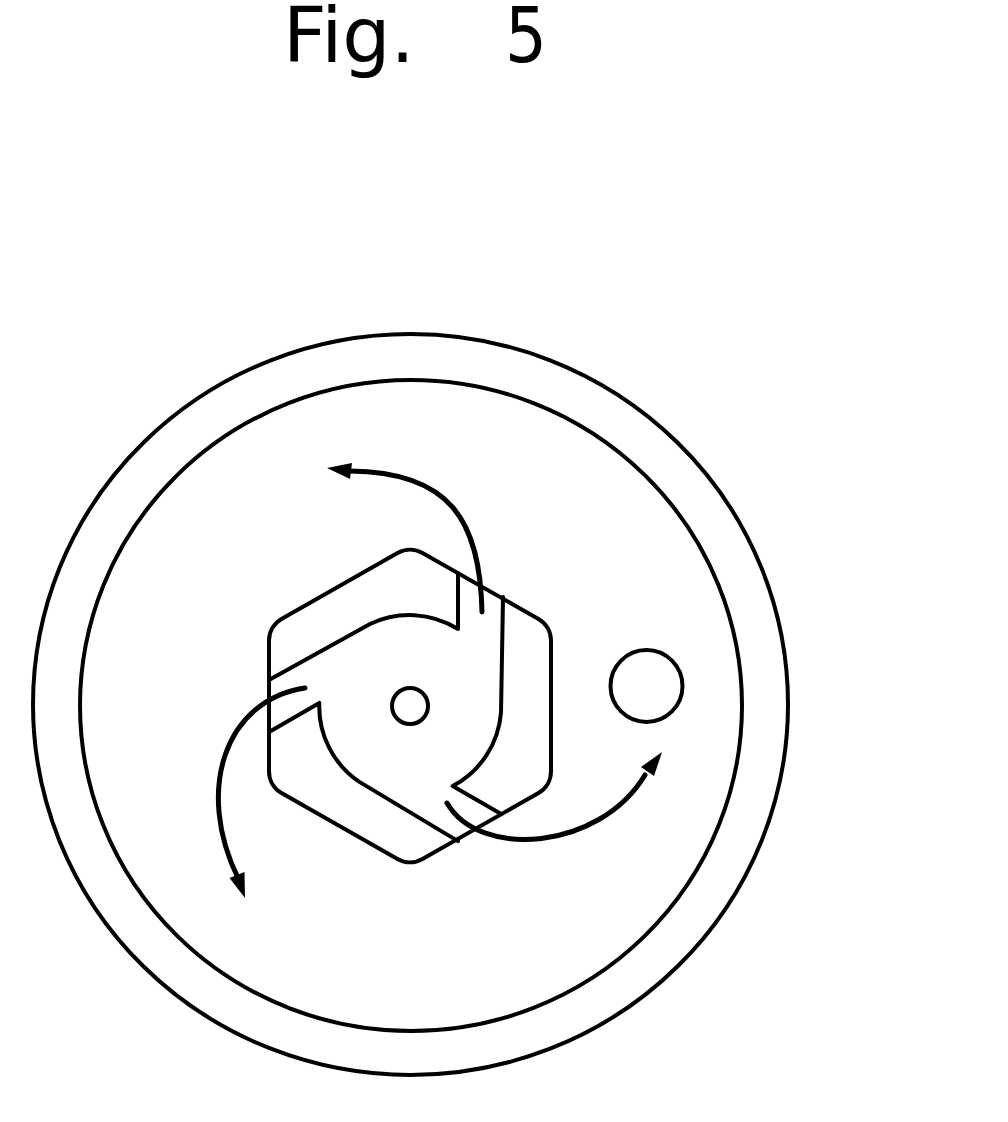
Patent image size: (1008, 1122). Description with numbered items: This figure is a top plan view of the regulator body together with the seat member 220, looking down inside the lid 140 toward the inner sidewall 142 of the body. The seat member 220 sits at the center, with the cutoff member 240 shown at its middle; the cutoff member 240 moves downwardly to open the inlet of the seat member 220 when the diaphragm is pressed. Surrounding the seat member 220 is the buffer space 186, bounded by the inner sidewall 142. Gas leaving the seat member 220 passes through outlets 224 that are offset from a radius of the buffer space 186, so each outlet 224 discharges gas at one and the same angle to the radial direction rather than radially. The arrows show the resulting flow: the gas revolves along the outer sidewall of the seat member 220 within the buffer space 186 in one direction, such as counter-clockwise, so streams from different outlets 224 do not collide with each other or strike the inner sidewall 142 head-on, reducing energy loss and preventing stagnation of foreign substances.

The lid 140 is at (705, 458).
The inner sidewall 142 is at (707, 557).
The buffer space 186 is at (545, 498).
The seat member 220 is at (348, 602).
The outlets 224 is at (492, 608).
The cutoff member 240 is at (400, 716).